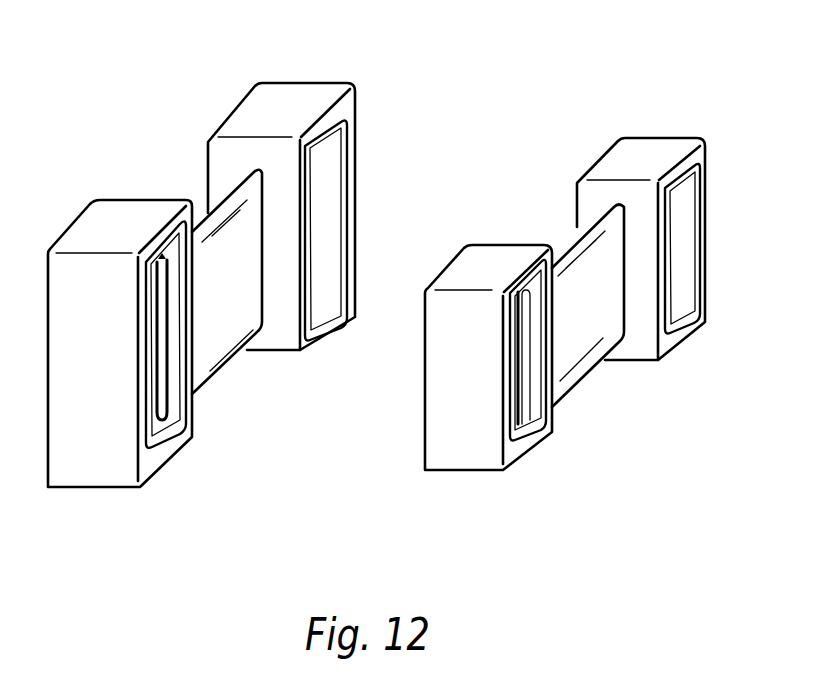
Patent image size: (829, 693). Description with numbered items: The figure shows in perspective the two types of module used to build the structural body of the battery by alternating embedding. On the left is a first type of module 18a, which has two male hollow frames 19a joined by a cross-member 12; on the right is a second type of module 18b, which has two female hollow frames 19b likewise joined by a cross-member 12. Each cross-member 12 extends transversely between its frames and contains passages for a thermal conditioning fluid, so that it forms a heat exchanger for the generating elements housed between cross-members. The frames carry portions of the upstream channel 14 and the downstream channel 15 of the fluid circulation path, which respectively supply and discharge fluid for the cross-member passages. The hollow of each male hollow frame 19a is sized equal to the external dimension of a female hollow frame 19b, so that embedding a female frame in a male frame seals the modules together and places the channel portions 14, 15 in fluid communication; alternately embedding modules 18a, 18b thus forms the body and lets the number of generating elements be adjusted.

The cross-member 12 is at (213, 337).
The upstream channel 14 is at (157, 427).
The downstream channel 15 is at (333, 168).
The first type of module 18a is at (149, 140).
The second type of module 18b is at (538, 176).
The male hollow frame 19a is at (277, 100).
The female hollow frame 19b is at (660, 163).